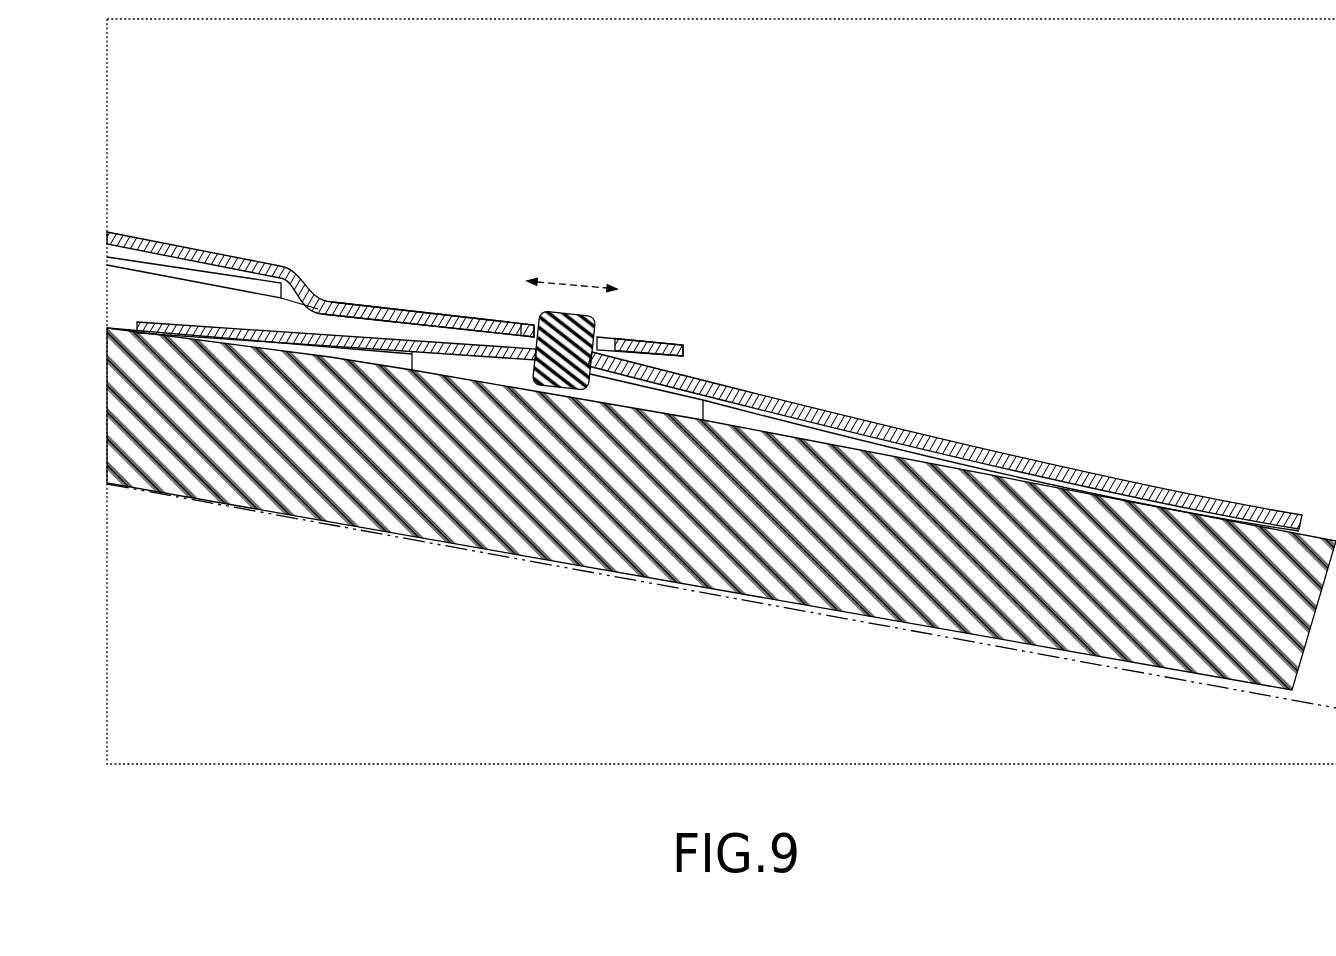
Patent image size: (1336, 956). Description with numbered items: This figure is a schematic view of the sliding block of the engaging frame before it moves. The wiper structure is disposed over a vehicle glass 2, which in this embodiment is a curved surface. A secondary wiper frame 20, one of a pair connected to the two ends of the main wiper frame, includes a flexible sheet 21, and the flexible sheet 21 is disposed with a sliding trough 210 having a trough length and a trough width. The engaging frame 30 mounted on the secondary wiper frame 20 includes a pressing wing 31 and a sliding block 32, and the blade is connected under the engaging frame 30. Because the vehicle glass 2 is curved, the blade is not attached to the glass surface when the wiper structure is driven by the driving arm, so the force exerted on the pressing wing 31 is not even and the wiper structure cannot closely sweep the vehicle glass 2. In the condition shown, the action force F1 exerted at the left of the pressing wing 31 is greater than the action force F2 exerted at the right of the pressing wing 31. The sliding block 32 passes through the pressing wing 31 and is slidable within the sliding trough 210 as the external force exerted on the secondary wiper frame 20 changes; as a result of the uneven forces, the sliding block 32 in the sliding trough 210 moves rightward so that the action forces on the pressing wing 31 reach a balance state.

The vehicle glass 2 is at (722, 591).
The secondary wiper frame 20 is at (254, 252).
The flexible sheet 21 is at (386, 309).
The engaging frame 30 is at (921, 406).
The pressing wing 31 is at (819, 406).
The sliding block 32 is at (541, 314).
The sliding trough 210 is at (612, 338).
The action force F1 is at (107, 487).
The action force F2 is at (1127, 498).